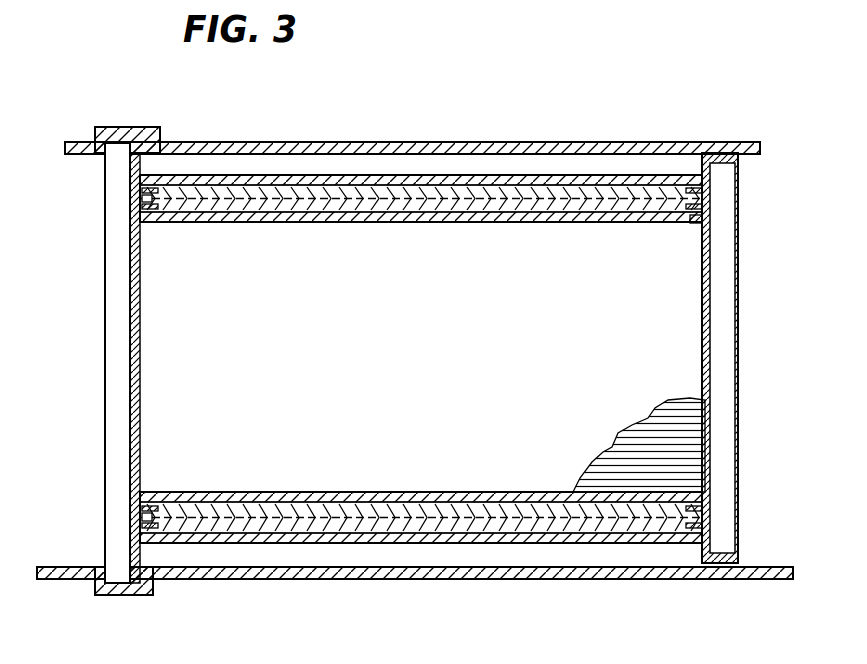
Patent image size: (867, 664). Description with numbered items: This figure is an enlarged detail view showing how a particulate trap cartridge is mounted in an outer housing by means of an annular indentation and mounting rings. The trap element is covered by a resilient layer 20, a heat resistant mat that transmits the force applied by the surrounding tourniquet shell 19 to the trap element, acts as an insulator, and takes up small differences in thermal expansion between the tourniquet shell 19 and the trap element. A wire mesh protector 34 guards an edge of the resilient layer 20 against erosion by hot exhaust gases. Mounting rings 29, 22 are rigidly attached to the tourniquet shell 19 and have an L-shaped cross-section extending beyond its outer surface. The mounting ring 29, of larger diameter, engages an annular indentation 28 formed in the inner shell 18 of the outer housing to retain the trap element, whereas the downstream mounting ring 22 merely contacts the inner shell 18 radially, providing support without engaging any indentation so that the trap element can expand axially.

The inner shell 18 is at (323, 142).
The tourniquet shell 19 is at (598, 543).
The resilient layer 20 is at (478, 187).
The mounting ring 22 is at (718, 150).
The annular indentation 28 is at (108, 596).
The mounting ring 29 is at (138, 137).
The wire mesh protector 34 is at (688, 222).